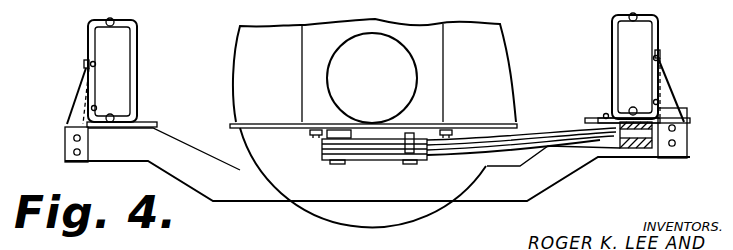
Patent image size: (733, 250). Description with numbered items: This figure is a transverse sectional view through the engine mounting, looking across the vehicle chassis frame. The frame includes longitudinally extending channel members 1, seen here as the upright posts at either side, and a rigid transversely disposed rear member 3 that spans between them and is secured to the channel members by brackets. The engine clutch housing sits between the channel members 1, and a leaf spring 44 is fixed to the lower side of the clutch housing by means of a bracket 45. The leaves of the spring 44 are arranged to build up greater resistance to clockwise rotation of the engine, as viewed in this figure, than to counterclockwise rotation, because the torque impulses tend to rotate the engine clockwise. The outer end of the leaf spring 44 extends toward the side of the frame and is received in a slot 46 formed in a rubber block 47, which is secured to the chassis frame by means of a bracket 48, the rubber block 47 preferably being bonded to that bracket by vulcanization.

The longitudinally extending channel member 1 is at (110, 43).
The rear transverse frame member 3 is at (238, 189).
The leaf spring 44 is at (437, 143).
The bracket 45 is at (378, 138).
The slot 46 is at (663, 125).
The rubber block 47 is at (677, 140).
The bracket 48 is at (640, 148).